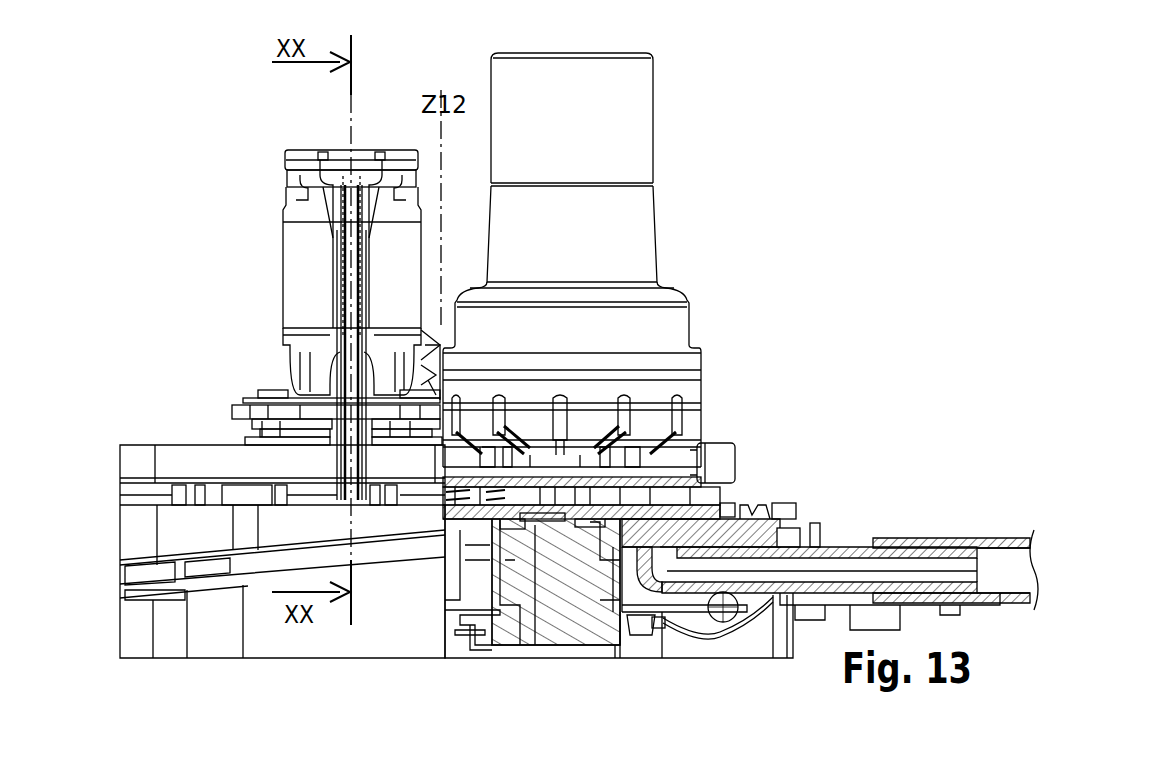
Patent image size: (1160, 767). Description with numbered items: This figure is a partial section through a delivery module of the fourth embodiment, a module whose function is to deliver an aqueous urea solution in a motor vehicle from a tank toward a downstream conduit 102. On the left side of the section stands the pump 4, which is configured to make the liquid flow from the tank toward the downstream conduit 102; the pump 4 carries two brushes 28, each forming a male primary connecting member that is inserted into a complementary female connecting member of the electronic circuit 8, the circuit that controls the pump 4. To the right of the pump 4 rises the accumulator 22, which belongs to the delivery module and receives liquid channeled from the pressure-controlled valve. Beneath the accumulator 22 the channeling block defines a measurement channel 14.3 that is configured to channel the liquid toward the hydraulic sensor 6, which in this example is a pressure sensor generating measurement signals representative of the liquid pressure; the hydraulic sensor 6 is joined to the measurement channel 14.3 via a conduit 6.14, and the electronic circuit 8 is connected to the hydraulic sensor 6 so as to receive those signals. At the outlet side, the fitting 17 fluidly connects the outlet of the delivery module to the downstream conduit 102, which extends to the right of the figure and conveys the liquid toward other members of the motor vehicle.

The pump 4 is at (300, 264).
The accumulator 22 is at (607, 232).
The brush 28 is at (325, 498).
The measurement channel 14.3 is at (632, 490).
The conduit 6.14 is at (590, 512).
The hydraulic sensor 6 is at (548, 600).
The electronic circuit 8 is at (455, 610).
The fitting 17 is at (843, 547).
The downstream conduit 102 is at (940, 538).